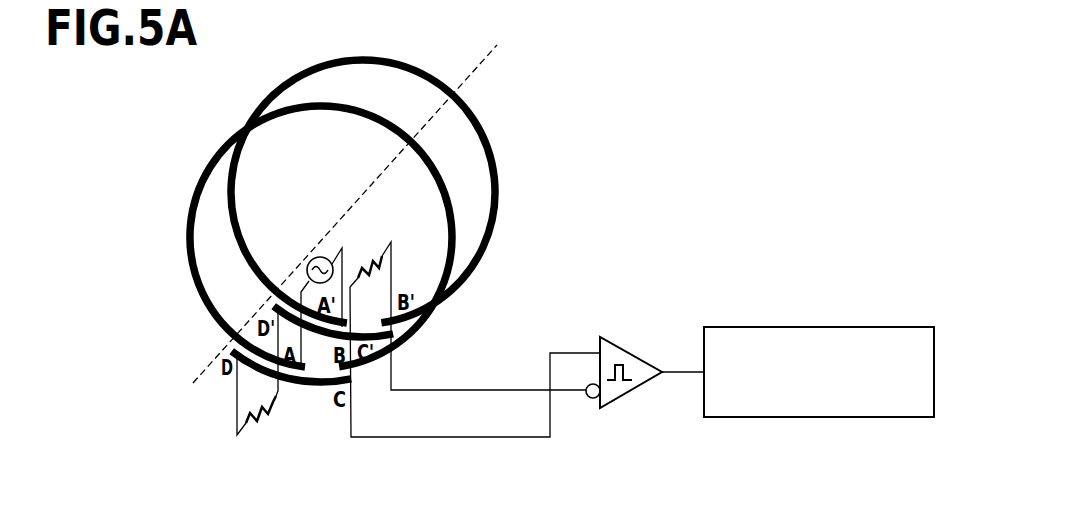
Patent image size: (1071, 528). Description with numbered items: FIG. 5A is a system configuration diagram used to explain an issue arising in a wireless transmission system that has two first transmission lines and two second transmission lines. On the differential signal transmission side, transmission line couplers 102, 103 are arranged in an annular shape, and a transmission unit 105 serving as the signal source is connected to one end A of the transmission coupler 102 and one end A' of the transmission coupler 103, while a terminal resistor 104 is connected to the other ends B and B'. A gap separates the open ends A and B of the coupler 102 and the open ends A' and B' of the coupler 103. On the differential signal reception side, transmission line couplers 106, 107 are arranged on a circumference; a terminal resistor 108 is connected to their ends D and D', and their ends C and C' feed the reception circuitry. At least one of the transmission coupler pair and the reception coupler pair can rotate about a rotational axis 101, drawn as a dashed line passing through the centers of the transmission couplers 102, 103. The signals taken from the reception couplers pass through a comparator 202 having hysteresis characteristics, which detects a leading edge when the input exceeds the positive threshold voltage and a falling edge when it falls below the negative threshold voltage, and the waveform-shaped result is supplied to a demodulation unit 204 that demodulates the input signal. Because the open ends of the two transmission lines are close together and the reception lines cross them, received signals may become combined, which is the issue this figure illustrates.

The rotational axis 101 is at (203, 372).
The transmission line coupler 102 is at (186, 169).
The transmission line coupler 103 is at (257, 85).
The terminal resistor 104 is at (382, 240).
The transmission unit 105 is at (308, 241).
The transmission line coupler 106 is at (293, 402).
The transmission line coupler 107 is at (318, 353).
The terminal resistor 108 is at (253, 438).
The comparator 202 is at (628, 336).
The demodulation unit 204 is at (818, 327).